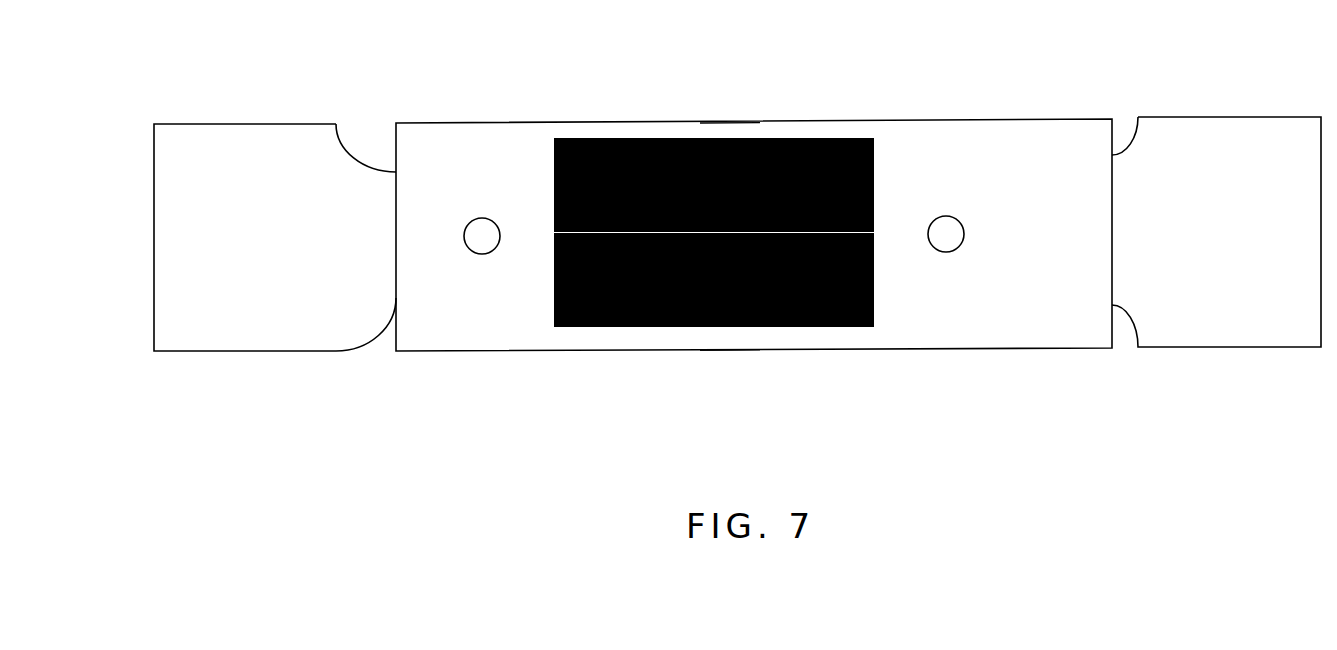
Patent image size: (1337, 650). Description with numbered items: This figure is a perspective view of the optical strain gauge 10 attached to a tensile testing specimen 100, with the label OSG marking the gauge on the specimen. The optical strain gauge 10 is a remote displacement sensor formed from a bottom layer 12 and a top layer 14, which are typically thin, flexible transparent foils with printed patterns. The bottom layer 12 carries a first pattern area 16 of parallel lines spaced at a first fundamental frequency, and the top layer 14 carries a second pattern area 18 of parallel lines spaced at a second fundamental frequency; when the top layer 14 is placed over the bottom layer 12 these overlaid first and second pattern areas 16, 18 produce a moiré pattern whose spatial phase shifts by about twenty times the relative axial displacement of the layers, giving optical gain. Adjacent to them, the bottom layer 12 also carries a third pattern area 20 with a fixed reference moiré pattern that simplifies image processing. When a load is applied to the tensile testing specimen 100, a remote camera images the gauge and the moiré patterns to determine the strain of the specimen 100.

The optical strain gauge 10 is at (1093, 116).
The bottom layer 12 is at (1056, 237).
The top layer 14 is at (438, 218).
The first pattern area 16 is at (730, 352).
The second pattern area 18 is at (730, 395).
The third pattern area 20 is at (726, 107).
The tensile testing specimen 100 is at (1213, 248).
The OSG region OSG is at (1028, 140).